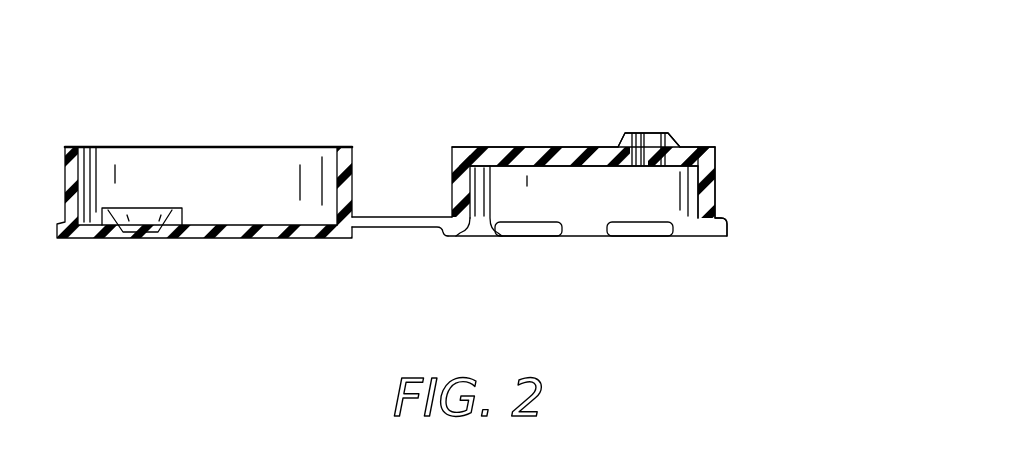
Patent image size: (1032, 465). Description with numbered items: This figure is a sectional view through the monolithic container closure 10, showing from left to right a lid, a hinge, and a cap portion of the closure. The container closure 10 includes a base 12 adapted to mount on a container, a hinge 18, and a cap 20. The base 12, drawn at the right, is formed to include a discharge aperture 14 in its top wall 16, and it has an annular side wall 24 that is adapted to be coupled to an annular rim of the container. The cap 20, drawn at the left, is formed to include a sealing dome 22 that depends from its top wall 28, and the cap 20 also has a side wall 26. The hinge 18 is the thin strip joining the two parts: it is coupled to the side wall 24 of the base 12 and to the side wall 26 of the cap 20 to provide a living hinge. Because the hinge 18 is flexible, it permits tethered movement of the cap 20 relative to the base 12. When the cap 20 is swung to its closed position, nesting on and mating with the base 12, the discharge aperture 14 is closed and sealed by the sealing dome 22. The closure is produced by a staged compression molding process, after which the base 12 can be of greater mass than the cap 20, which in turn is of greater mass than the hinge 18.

The container closure 10 is at (613, 100).
The base 12 is at (590, 256).
The discharge aperture 14 is at (664, 150).
The top wall 16 is at (546, 163).
The hinge 18 is at (392, 214).
The cap 20 is at (206, 250).
The sealing dome 22 is at (170, 226).
The annular side wall 24 is at (702, 192).
The side wall 26 is at (73, 174).
The top wall 28 is at (251, 226).